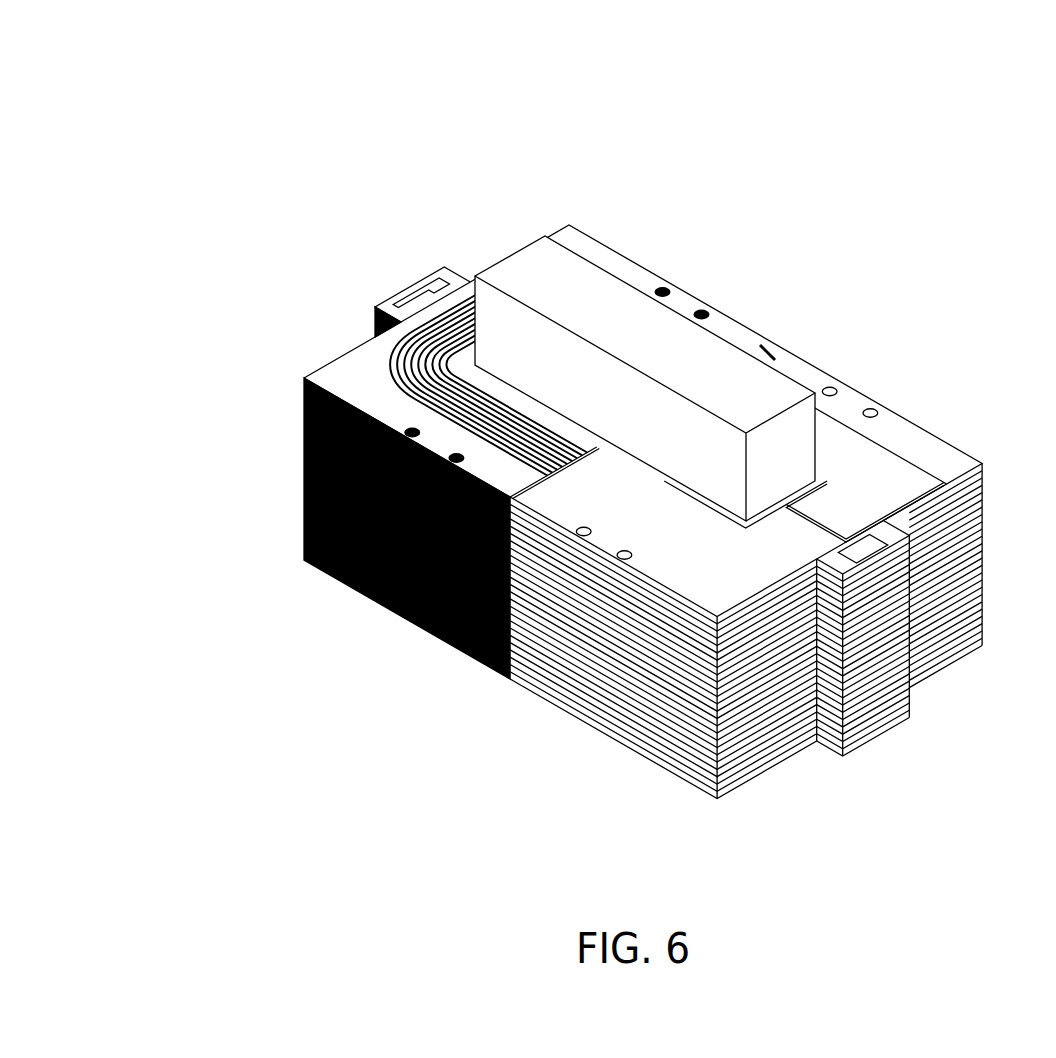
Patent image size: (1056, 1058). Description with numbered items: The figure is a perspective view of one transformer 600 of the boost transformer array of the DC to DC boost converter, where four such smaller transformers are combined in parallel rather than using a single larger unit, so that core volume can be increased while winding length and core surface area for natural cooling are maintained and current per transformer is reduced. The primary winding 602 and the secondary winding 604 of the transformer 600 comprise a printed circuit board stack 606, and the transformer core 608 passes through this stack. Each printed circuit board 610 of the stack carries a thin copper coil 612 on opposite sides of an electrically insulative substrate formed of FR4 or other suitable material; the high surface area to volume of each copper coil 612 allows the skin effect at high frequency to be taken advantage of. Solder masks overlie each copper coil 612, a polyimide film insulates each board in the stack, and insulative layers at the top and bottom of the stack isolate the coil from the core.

The transformer 600 is at (590, 460).
The primary winding 602 is at (780, 785).
The secondary winding 604 is at (266, 482).
The printed circuit board stack 606 is at (377, 297).
The transformer core 608 is at (525, 267).
The printed circuit board 610 is at (622, 262).
The copper coil 612 is at (860, 452).